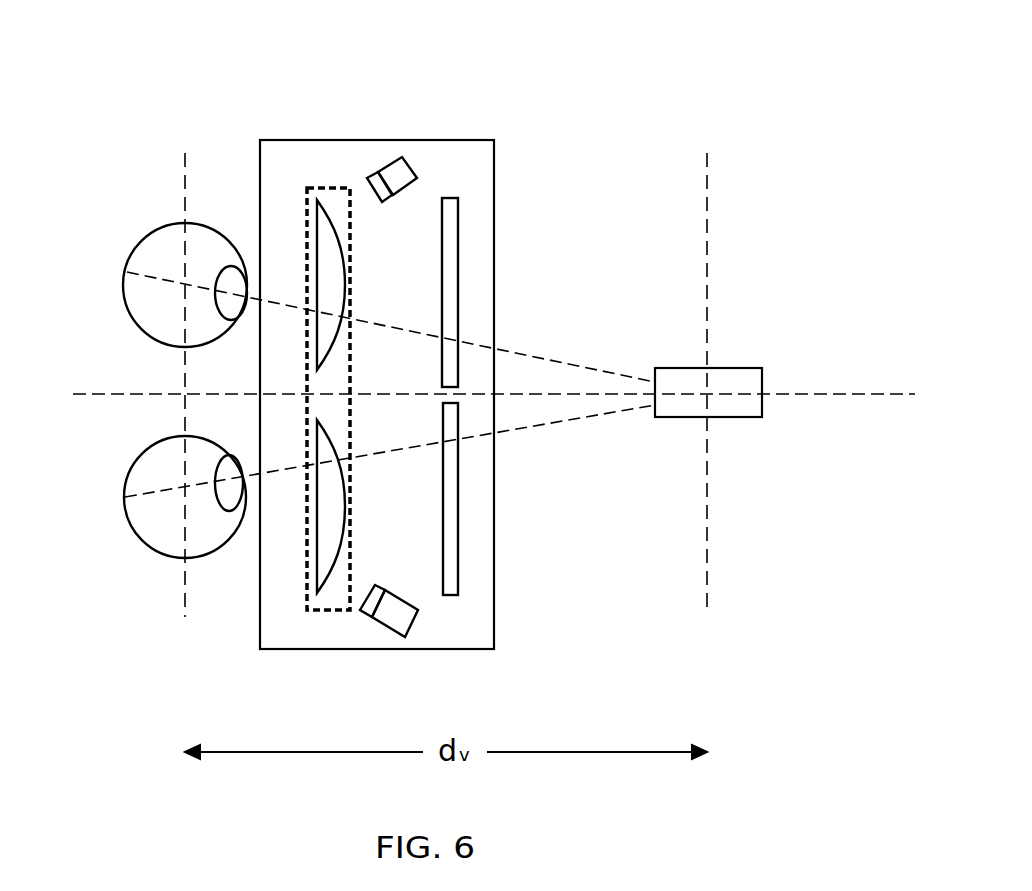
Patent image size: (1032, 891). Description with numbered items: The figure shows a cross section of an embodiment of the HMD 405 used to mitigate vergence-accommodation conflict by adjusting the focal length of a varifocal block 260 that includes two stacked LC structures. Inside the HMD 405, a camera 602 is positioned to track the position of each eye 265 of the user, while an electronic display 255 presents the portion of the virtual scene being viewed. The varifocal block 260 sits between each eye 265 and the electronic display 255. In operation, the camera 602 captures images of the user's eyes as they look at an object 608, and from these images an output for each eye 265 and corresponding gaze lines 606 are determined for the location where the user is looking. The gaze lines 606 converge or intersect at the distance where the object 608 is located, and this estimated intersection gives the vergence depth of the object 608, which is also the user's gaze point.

The varifocal block 260 is at (310, 188).
The camera 602 is at (337, 728).
The HMD 405 is at (477, 140).
The eye 265 is at (122, 283).
The electronic display 255 is at (651, 671).
The gaze lines 606 is at (613, 413).
The object 608 is at (733, 368).